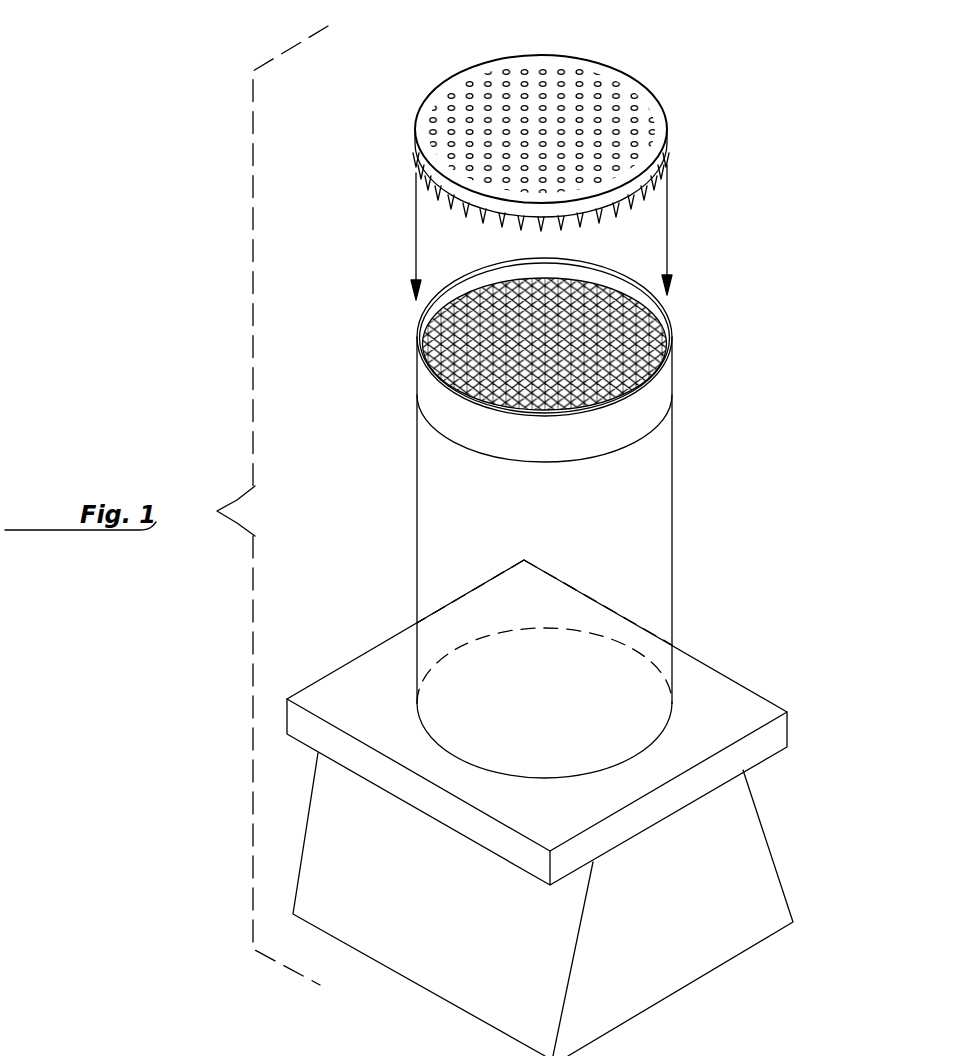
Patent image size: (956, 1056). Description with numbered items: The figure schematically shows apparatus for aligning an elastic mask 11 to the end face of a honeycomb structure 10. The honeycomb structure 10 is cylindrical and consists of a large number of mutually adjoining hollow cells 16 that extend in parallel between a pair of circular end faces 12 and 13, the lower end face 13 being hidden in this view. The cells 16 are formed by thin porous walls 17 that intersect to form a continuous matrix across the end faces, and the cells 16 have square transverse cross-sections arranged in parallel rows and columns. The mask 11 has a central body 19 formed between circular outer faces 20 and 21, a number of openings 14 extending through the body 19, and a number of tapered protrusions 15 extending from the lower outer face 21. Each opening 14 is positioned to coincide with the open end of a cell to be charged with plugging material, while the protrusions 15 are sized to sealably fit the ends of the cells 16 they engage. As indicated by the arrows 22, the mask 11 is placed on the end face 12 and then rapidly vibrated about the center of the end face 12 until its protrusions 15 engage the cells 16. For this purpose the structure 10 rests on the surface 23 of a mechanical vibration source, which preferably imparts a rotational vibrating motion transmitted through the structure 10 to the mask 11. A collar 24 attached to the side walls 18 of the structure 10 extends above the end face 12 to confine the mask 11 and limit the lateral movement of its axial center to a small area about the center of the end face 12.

The honeycomb structure 10 is at (564, 518).
The elastic mask 11 is at (558, 139).
The end face 12 is at (545, 347).
The end face 13 is at (430, 738).
The openings 14 is at (450, 143).
The protrusions 15 is at (630, 200).
The cells 16 is at (450, 392).
The porous walls 17 is at (660, 360).
The side walls 18 is at (455, 533).
The central body 19 is at (666, 155).
The outer face 20 is at (587, 83).
The lower outer face 21 is at (490, 225).
The arrows 22 is at (416, 222).
The surface 23 is at (703, 706).
The collar 24 is at (625, 415).